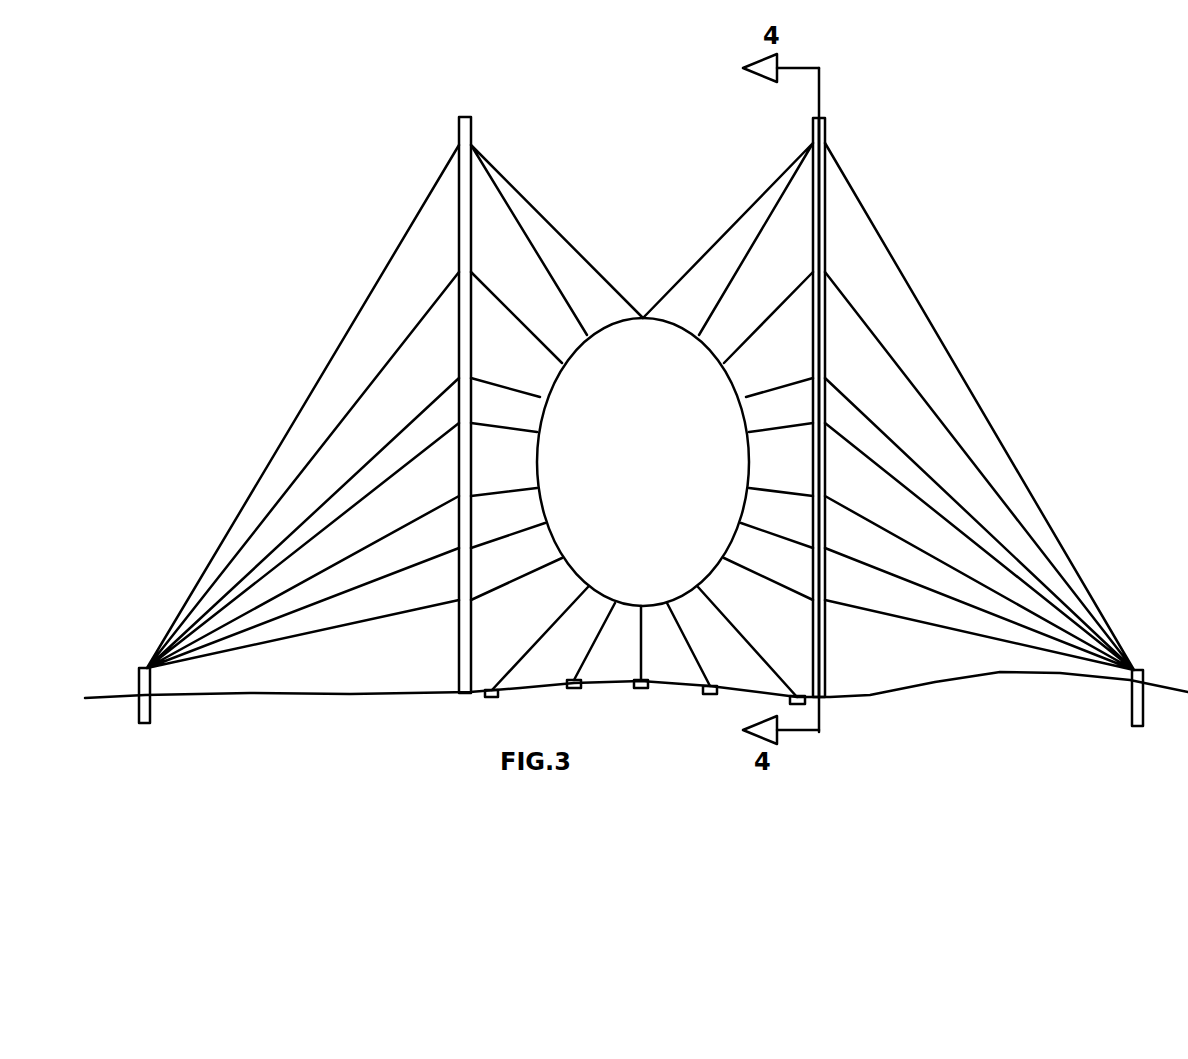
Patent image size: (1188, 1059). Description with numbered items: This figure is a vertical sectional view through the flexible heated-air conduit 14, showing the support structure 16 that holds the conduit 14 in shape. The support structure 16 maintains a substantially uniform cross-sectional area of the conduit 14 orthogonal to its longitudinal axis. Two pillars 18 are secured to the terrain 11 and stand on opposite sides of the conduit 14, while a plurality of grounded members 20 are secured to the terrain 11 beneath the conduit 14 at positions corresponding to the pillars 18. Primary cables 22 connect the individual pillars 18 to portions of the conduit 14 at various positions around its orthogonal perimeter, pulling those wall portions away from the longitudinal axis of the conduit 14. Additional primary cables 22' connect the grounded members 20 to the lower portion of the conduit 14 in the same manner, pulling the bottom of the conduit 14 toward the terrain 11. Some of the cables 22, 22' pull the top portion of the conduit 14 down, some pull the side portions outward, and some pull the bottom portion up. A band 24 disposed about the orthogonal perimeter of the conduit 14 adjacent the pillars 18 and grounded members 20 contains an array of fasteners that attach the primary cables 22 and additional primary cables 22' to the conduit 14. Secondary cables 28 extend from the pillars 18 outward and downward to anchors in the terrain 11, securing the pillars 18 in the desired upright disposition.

The terrain 11 is at (936, 682).
The conduit 14 is at (537, 467).
The support structure 16 is at (352, 241).
The pillars 18 is at (460, 128).
The grounded members 20 is at (710, 692).
The primary cables 22 is at (642, 371).
The additional primary cables 22' is at (644, 665).
The bands 24 is at (730, 374).
The secondary cables 28 is at (279, 447).